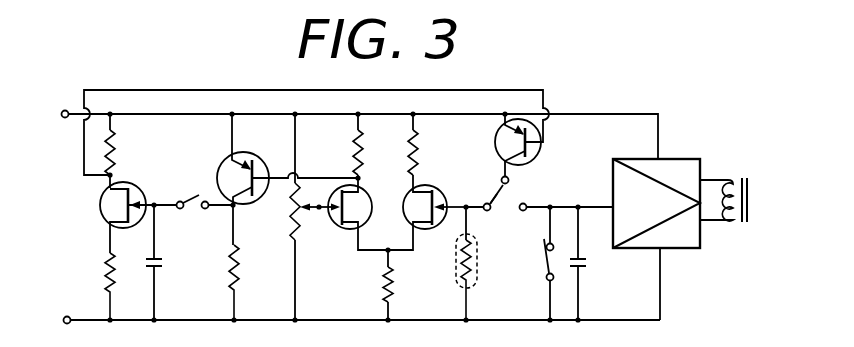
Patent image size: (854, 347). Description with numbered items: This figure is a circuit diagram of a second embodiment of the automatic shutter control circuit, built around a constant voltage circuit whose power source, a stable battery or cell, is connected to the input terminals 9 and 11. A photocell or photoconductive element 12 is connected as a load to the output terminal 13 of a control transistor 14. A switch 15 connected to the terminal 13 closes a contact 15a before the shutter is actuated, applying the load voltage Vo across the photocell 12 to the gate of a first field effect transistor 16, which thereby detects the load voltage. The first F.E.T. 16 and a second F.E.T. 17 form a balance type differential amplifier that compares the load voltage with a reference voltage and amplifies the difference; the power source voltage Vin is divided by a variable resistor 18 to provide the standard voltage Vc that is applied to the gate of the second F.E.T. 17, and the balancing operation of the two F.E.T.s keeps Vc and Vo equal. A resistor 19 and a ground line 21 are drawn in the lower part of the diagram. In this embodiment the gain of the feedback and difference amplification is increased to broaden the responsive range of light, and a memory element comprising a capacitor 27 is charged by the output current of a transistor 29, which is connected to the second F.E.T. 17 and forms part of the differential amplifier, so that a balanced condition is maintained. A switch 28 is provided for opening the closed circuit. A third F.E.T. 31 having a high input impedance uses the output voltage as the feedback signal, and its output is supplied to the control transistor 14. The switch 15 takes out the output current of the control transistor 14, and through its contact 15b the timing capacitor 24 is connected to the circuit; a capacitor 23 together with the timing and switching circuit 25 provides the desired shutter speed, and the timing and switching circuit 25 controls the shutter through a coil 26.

The input terminal 9 is at (64, 111).
The input terminal 11 is at (65, 323).
The photocell 12 is at (458, 261).
The output terminal 13 is at (467, 201).
The control transistor 14 is at (497, 138).
The switch 15 is at (510, 194).
The contact 15a is at (500, 212).
The contact 15b is at (530, 201).
The first field effect transistor 16 is at (417, 197).
The second field effect transistor 17 is at (364, 190).
The variable resistor 18 is at (302, 221).
The resistor 19 is at (387, 280).
The ground line 21 is at (468, 321).
The capacitor 23 is at (587, 263).
The capacitor 24 is at (543, 251).
The timing and switching circuit 25 is at (672, 165).
The coil 26 is at (737, 200).
The capacitor 27 is at (163, 262).
The switch 28 is at (198, 197).
The transistor 29 is at (225, 159).
The third field effect transistor 31 is at (100, 205).